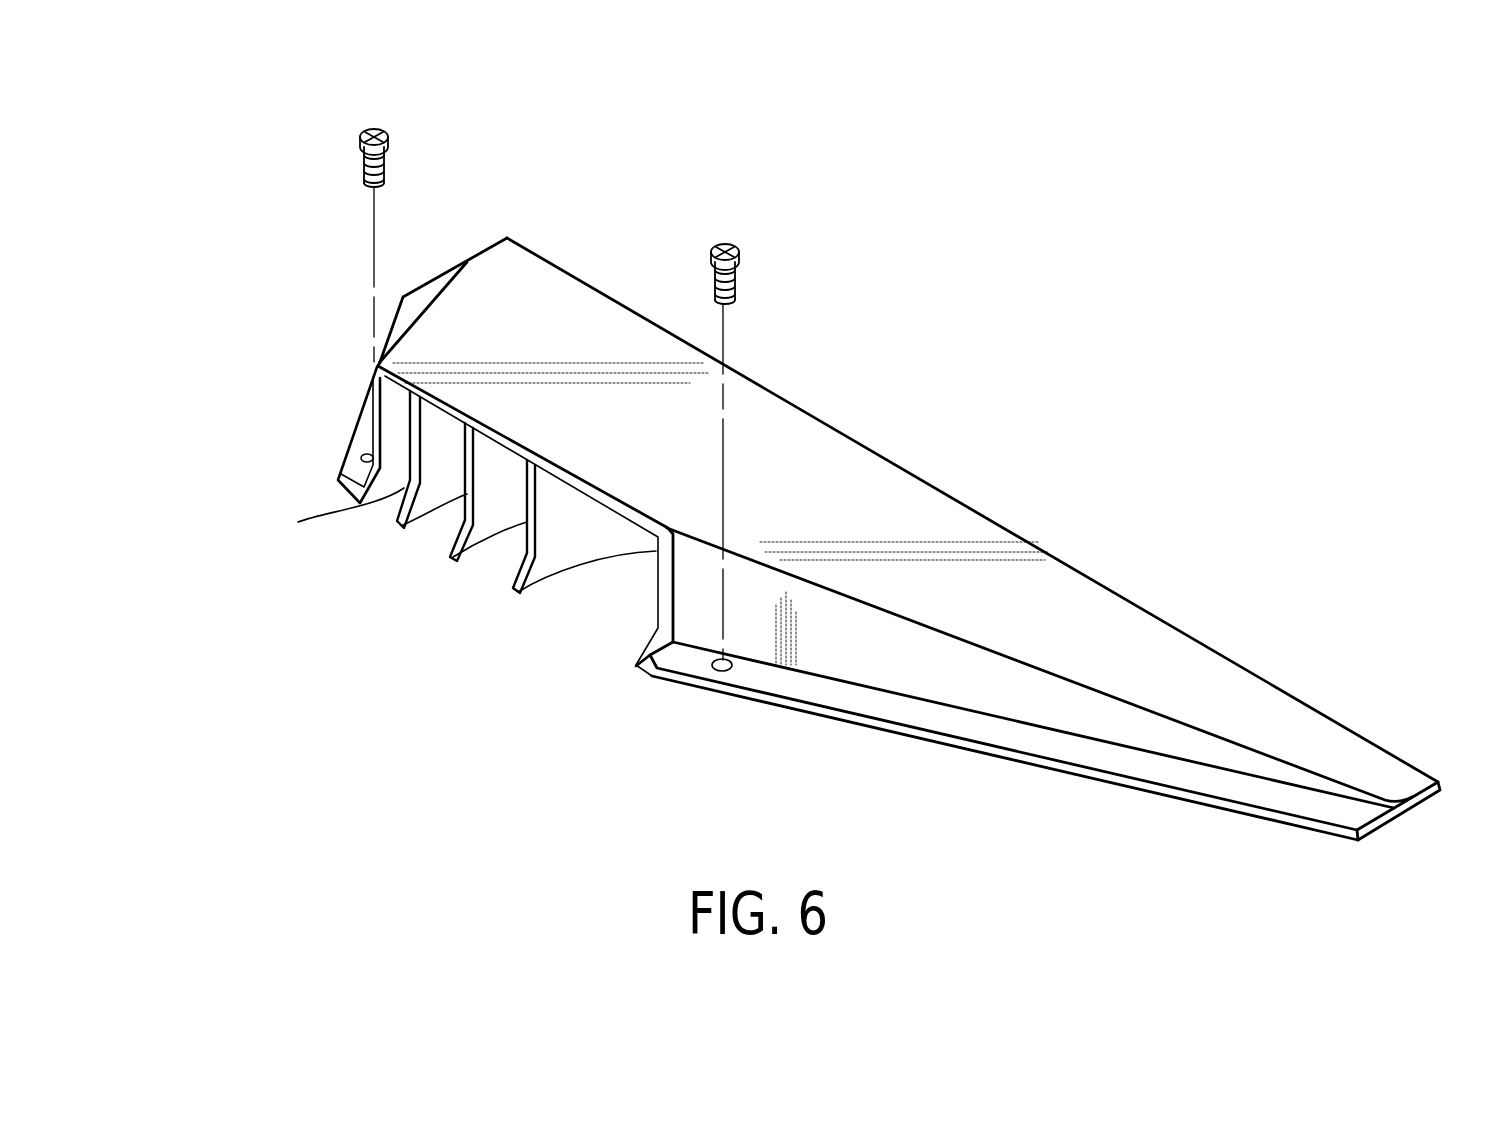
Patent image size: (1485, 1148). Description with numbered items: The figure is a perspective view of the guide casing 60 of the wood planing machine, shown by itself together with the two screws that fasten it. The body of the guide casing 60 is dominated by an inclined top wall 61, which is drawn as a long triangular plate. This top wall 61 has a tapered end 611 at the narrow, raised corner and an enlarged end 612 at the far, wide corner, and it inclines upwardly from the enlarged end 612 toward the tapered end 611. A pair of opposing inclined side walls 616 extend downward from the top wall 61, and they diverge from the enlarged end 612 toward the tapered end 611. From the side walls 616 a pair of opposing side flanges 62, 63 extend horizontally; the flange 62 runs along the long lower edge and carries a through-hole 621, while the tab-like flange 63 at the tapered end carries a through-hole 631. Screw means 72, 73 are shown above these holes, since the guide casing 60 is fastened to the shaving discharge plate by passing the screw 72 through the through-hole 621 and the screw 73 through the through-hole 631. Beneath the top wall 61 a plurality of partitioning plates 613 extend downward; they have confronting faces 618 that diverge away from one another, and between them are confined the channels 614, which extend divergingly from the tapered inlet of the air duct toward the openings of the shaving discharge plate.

The guide casing 60 is at (963, 756).
The inclined top wall 61 is at (457, 347).
The tapered end 611 is at (378, 362).
The enlarged end 612 is at (1186, 650).
The partitioning plates 613 is at (397, 525).
The channels 614 is at (298, 522).
The inclined side walls 616 is at (1010, 693).
The confronting faces 618 is at (433, 495).
The side flange 62 is at (833, 693).
The through-hole 621 is at (707, 667).
The side flange 63 is at (362, 428).
The through-hole 631 is at (362, 458).
The screw means 72 is at (737, 273).
The screw means 73 is at (363, 160).